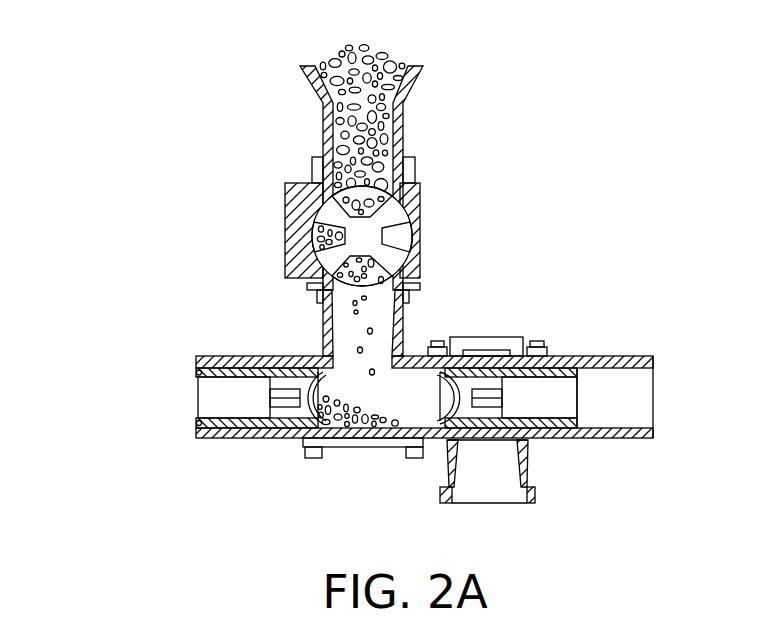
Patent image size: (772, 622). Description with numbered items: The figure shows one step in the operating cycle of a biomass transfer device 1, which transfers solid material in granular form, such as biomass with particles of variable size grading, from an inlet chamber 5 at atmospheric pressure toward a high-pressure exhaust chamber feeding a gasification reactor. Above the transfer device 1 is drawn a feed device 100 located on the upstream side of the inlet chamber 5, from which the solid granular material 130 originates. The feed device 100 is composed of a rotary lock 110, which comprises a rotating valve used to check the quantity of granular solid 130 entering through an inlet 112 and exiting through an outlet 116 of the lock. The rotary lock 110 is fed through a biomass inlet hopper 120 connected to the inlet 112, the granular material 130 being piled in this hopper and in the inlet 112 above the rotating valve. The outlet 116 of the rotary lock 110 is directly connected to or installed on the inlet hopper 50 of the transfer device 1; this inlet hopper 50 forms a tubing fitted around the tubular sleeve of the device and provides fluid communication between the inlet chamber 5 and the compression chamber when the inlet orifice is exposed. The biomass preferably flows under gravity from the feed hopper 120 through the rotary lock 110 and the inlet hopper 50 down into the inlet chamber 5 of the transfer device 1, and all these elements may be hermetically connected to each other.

The feed device 100 is at (672, 290).
The biomass inlet hopper 120 is at (677, 66).
The rotary lock 110 is at (677, 172).
The inlet 112 is at (395, 152).
The solid granular material 130 is at (357, 82).
The outlet 116 is at (398, 278).
The inlet hopper 50 is at (403, 322).
The inlet chamber 5 is at (350, 335).
The transfer device 1 is at (440, 503).